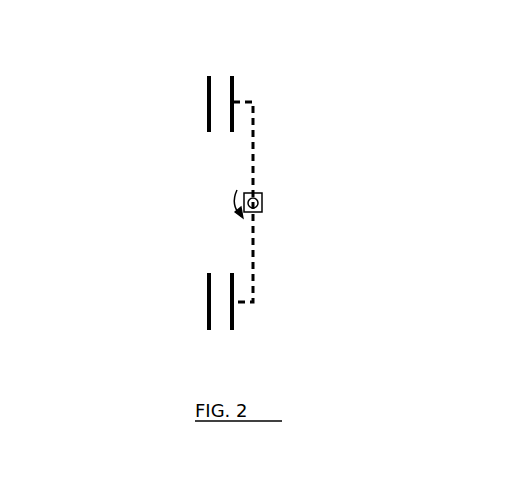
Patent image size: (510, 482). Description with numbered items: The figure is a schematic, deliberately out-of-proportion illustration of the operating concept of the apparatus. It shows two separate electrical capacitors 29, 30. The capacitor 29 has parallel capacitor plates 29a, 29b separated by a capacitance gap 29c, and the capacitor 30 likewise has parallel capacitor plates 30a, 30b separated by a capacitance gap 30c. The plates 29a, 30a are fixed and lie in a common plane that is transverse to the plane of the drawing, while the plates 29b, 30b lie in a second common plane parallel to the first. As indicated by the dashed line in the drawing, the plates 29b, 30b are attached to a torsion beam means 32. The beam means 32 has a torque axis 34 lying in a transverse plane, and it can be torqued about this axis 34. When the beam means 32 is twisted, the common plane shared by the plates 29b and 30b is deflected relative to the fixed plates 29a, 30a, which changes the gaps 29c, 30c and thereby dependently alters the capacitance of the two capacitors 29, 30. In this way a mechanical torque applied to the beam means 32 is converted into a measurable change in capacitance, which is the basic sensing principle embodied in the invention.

The electrical capacitor 29 is at (222, 328).
The capacitor plate 29a is at (207, 303).
The capacitor plate 29b is at (234, 310).
The capacitance gap 29c is at (200, 322).
The electrical capacitor 30 is at (217, 81).
The capacitor plate 30a is at (207, 115).
The capacitor plate 30b is at (234, 90).
The capacitance gap 30c is at (202, 96).
The torsion beam means 32 is at (265, 207).
The torque axis 34 is at (260, 196).